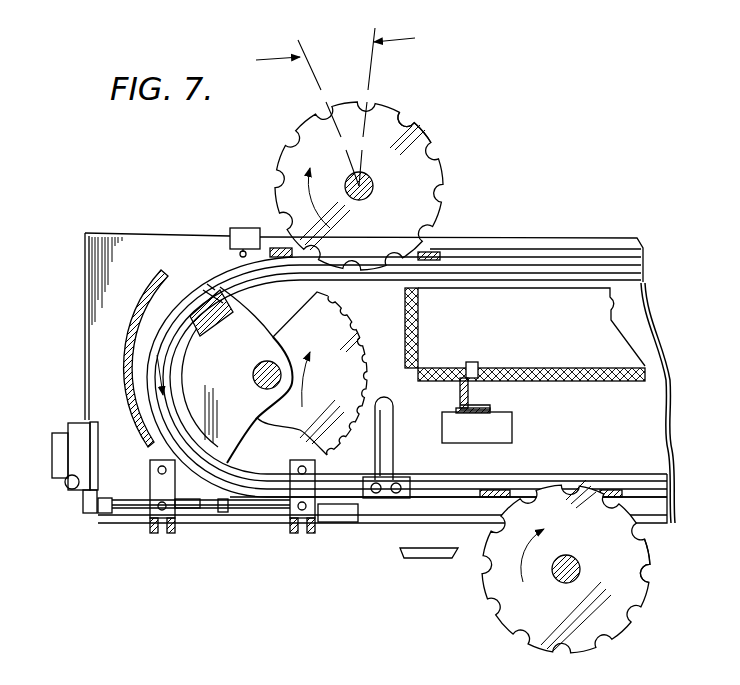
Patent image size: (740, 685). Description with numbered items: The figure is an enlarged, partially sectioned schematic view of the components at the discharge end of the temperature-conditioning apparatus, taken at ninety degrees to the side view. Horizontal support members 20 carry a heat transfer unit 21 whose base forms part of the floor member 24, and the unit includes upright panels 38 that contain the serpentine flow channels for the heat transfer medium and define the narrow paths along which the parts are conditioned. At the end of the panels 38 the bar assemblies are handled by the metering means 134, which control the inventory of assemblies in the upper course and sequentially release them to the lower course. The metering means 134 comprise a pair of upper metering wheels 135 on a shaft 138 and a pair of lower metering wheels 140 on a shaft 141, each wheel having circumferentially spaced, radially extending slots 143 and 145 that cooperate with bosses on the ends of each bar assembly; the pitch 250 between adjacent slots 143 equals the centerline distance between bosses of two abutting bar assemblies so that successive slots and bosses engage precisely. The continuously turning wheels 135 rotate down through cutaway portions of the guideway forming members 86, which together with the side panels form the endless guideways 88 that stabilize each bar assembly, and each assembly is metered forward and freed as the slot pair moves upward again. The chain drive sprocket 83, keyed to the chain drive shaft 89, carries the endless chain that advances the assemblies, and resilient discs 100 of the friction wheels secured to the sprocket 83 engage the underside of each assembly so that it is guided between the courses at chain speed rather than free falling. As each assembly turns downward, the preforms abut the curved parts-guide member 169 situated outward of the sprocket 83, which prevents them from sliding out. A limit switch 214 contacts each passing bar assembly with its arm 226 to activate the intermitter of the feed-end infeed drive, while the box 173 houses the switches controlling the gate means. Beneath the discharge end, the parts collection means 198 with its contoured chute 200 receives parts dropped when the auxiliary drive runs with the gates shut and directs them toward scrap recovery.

The horizontal support members 20 is at (482, 400).
The heat transfer unit 21 is at (598, 393).
The floor member 24 is at (612, 381).
The upright panels 38 is at (598, 330).
The sprocket 83 is at (332, 342).
The guideway forming members 86 is at (500, 478).
The endless guideways 88 is at (440, 487).
The chain drive shaft 89 is at (254, 385).
The resilient discs 100 is at (190, 308).
The metering means 134 is at (190, 173).
The upper metering wheels 135 is at (349, 178).
The shaft 138 is at (374, 190).
The lower metering wheels 140 is at (602, 566).
The shaft 141 is at (584, 540).
The slots 143 is at (410, 118).
The slots 145 is at (640, 576).
The curved parts-guide member 169 is at (138, 305).
The box 173 is at (80, 423).
The parts collection means 198 is at (440, 600).
The contoured chute 200 is at (445, 549).
The limit switch 214 is at (247, 228).
The arm 226 is at (241, 250).
The pitch 250 is at (335, 107).